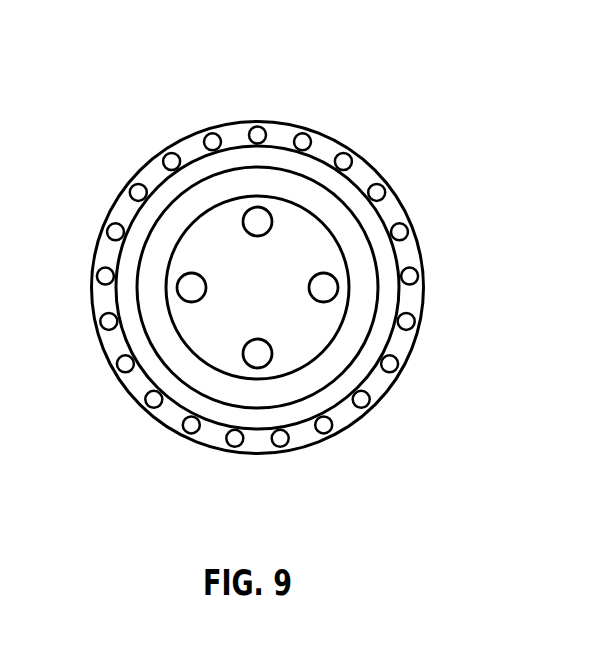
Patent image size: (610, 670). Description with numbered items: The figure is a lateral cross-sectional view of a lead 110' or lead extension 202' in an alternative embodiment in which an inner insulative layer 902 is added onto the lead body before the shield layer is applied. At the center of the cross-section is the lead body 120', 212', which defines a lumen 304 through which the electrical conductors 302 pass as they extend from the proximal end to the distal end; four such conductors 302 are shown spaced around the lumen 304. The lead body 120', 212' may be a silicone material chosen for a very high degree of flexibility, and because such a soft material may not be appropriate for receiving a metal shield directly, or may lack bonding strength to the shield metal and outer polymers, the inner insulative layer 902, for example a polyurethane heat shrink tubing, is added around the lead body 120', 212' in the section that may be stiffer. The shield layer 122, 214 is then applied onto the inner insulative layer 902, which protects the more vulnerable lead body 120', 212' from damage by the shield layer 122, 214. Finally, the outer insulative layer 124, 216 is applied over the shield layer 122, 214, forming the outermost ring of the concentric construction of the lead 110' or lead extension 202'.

The lead 110' is at (285, 238).
The lead extension 202' is at (285, 238).
The shield layer 122 is at (277, 277).
The shield layer 214 is at (303, 134).
The outer insulative layer 124 is at (329, 287).
The outer insulative layer 216 is at (390, 202).
The inner insulative layer 902 is at (390, 258).
The lead body 120' is at (370, 287).
The lead body 212' is at (370, 287).
The electrical conductors 302 is at (258, 355).
The lumen 304 is at (293, 323).